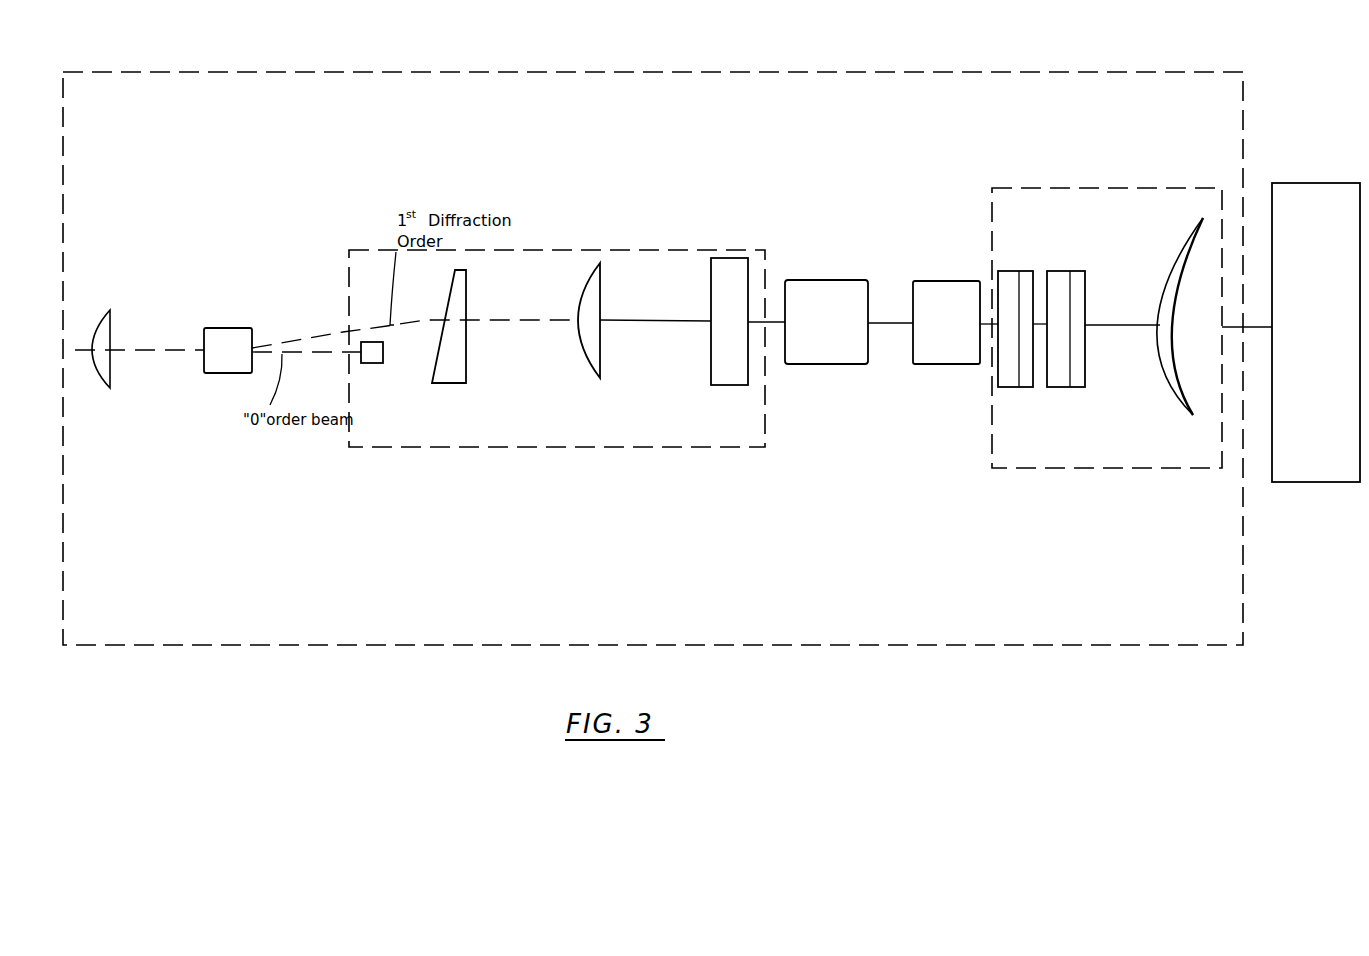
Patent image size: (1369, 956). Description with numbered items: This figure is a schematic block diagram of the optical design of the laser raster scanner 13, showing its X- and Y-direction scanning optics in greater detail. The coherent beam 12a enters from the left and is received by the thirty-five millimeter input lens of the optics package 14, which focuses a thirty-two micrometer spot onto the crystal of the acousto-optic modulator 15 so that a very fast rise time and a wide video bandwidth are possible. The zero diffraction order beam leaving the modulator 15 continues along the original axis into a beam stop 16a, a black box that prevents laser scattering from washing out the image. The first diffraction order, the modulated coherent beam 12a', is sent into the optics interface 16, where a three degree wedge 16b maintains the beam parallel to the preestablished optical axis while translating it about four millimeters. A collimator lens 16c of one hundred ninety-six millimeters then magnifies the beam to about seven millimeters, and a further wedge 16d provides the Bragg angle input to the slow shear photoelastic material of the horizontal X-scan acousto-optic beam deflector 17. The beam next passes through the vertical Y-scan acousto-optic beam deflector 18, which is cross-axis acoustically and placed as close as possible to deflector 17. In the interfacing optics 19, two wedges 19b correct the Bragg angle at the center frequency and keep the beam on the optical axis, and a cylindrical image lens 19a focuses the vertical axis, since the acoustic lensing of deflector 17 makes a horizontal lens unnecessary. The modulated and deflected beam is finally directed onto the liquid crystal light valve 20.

The optical scanning system 13 is at (565, 71).
The coherent beam 12a is at (137, 307).
The optics package 14 is at (110, 328).
The acousto-optic modulator 15 is at (219, 328).
The modulated coherent beam 12a' is at (415, 316).
The optics interface 16 is at (575, 249).
The beam stop 16a is at (383, 352).
The wedge 16b is at (466, 305).
The collimator lens 16c is at (600, 302).
The wedge 16d is at (711, 357).
The X-scan acousto-optic beam deflector 17 is at (815, 280).
The Y-scan acousto-optic beam deflector 18 is at (950, 281).
The interfacing optics 19 is at (1082, 186).
The wedges 19b is at (1058, 271).
The cylindrical lens 19a is at (1168, 392).
The liquid crystal light valve 20 is at (1305, 183).